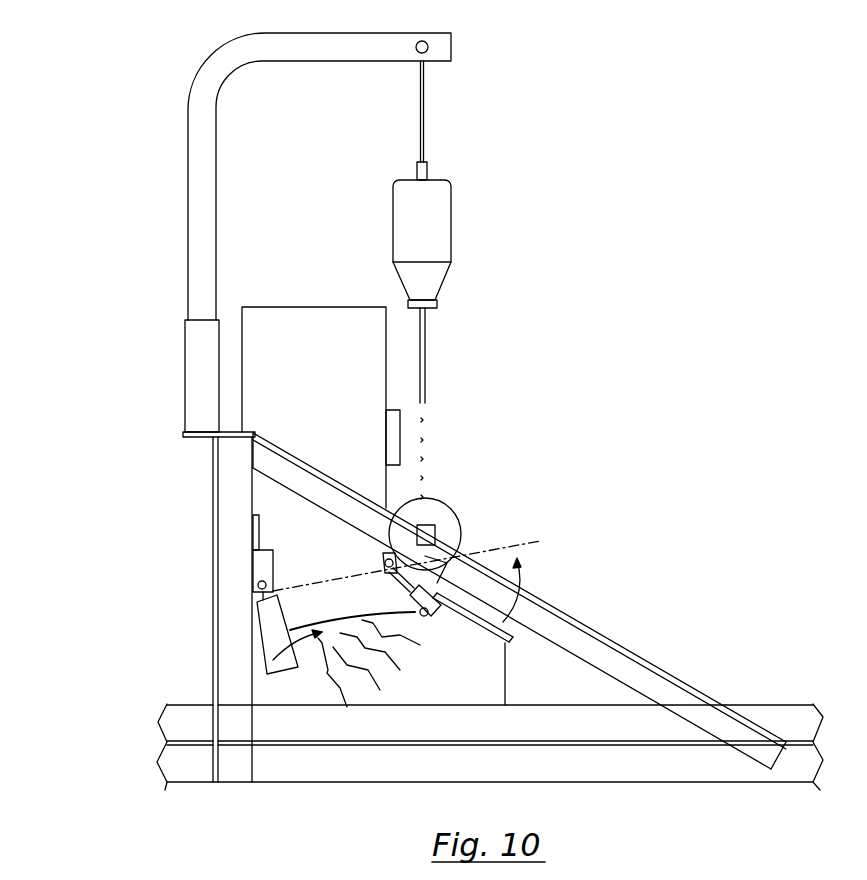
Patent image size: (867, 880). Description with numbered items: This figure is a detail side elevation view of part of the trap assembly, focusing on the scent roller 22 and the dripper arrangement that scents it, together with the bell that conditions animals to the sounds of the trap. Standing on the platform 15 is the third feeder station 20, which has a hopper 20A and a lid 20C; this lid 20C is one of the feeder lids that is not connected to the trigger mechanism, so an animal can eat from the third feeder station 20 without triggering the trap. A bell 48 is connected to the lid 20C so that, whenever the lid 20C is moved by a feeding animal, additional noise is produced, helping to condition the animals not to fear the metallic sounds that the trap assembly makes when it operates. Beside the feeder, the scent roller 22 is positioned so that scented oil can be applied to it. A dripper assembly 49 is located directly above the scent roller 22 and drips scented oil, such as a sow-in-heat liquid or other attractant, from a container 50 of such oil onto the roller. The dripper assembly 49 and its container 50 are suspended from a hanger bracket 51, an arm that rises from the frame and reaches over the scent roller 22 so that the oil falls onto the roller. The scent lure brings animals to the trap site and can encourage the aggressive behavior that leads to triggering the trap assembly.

The hanger bracket 51 is at (208, 61).
The container 50 is at (435, 211).
The dripper assembly 49 is at (427, 333).
The hopper 20A is at (307, 325).
The third feeder station 20 is at (262, 385).
The scent roller 22 is at (446, 514).
The bell 48 is at (270, 633).
The lid 20C is at (508, 652).
The platform 15 is at (763, 703).